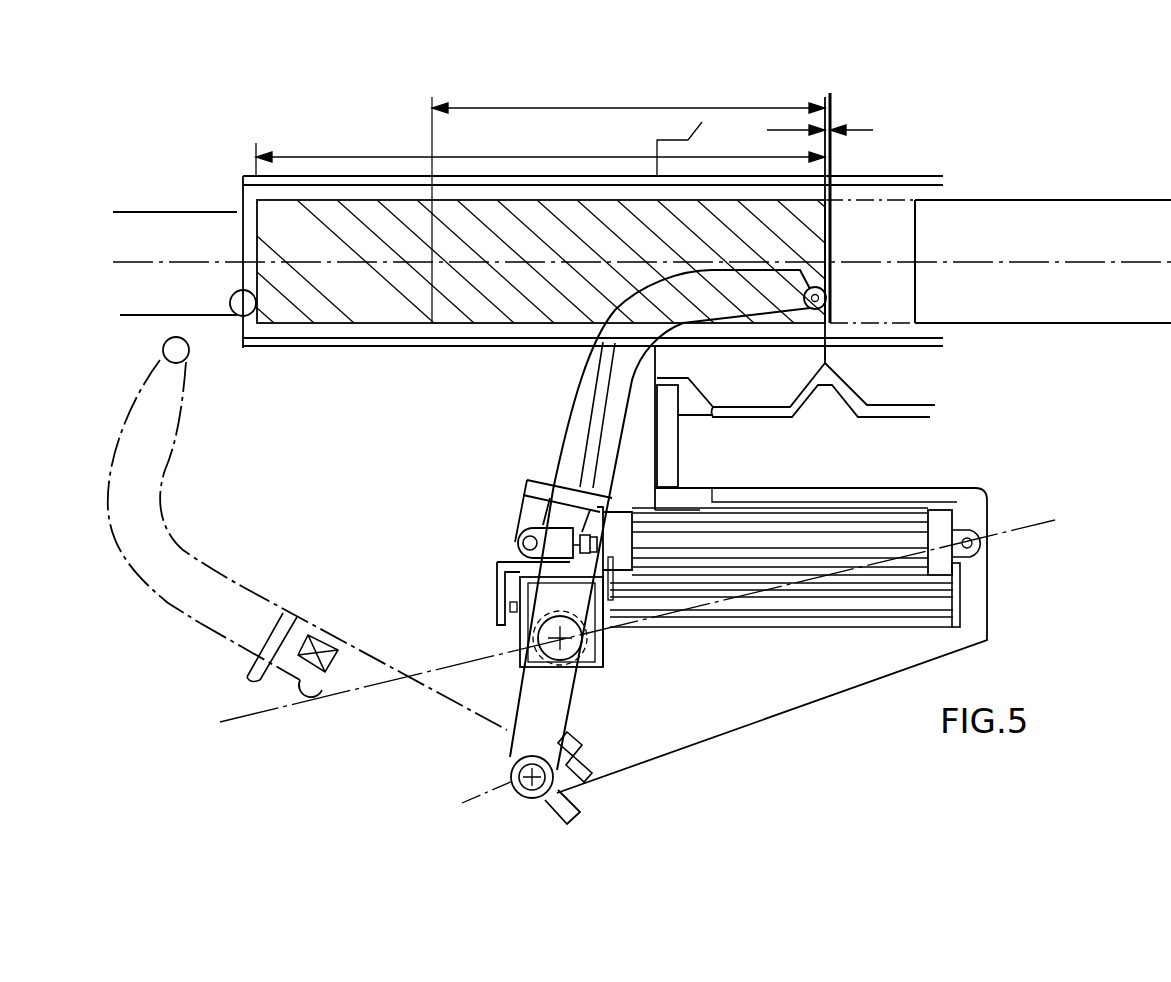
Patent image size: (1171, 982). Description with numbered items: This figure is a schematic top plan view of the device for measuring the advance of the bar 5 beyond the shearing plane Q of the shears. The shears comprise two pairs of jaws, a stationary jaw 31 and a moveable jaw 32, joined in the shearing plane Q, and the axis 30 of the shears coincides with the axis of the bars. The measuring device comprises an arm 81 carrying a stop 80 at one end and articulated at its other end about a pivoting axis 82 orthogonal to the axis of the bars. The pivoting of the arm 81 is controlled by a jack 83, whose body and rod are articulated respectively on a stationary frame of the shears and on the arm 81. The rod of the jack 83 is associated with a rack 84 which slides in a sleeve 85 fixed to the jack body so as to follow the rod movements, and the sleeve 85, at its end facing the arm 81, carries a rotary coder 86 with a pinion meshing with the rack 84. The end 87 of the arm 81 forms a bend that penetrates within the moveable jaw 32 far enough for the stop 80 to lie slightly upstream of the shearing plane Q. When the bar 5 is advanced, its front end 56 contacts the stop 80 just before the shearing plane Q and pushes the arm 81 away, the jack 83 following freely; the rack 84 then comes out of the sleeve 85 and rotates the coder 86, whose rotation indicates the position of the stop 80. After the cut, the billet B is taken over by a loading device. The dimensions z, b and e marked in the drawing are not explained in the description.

The bar 5 is at (1037, 223).
The front end 56 is at (913, 230).
The axis of the shears 30 is at (197, 262).
The stationary jaw 31 is at (868, 380).
The moveable jaw 32 is at (722, 380).
The stop 80 is at (830, 292).
The arm 81 is at (262, 595).
The pivoting axis 82 is at (510, 779).
The jack 83 is at (803, 530).
The rack 84 is at (500, 575).
The sleeve 85 is at (722, 622).
The rotary coder 86 is at (603, 648).
The end of the arm 87 is at (158, 442).
The billet B is at (497, 300).
The shearing plane Q is at (838, 194).
The dimension z is at (628, 204).
The dimension b is at (540, 149).
The dimension e is at (820, 121).